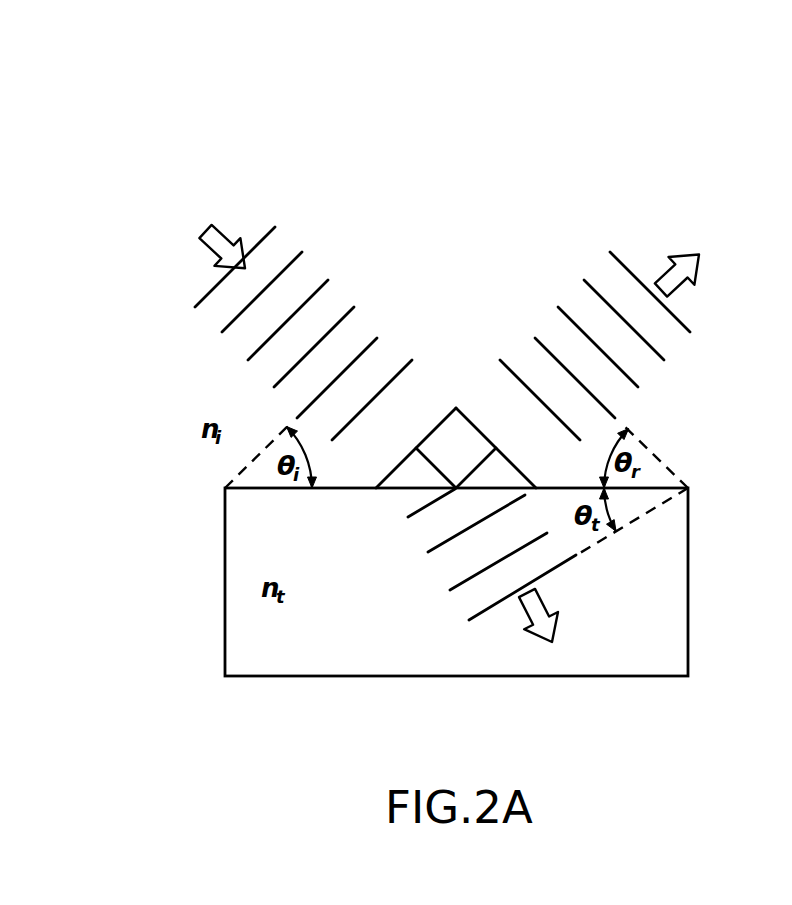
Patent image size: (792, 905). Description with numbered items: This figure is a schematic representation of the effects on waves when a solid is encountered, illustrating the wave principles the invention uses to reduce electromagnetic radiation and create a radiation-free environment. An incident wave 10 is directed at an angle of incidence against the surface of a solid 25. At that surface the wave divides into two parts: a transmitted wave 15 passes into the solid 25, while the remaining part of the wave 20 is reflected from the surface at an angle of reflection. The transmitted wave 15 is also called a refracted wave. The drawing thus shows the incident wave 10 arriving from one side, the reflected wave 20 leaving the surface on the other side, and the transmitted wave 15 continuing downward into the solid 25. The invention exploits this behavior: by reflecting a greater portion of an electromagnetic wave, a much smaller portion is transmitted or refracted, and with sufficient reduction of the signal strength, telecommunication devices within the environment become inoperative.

The incident wave 10 is at (329, 226).
The reflected wave 20 is at (606, 238).
The transmitted wave 15 is at (619, 617).
The solid 25 is at (225, 599).